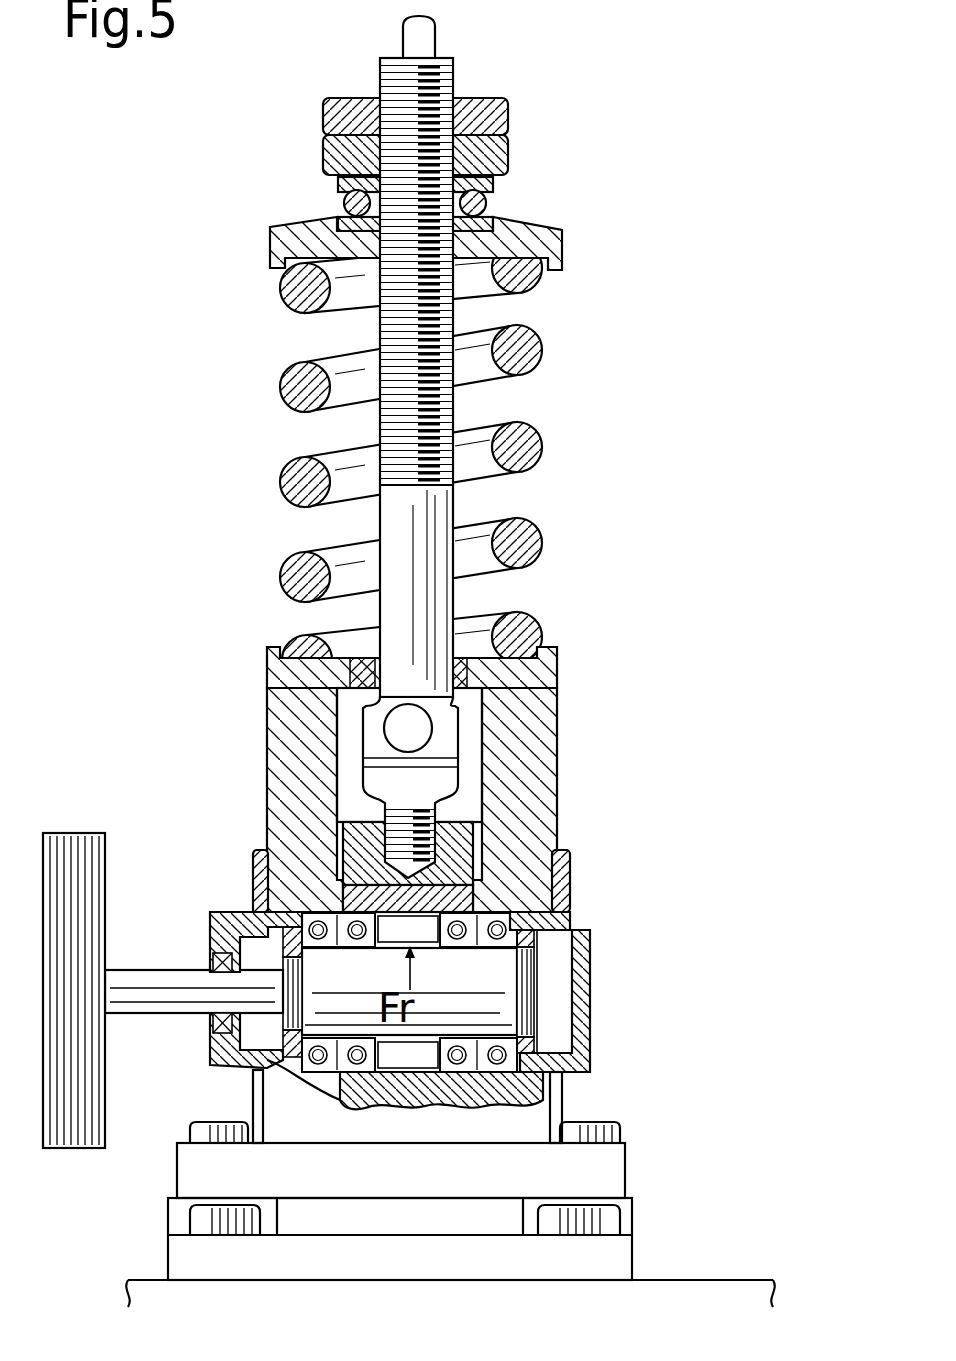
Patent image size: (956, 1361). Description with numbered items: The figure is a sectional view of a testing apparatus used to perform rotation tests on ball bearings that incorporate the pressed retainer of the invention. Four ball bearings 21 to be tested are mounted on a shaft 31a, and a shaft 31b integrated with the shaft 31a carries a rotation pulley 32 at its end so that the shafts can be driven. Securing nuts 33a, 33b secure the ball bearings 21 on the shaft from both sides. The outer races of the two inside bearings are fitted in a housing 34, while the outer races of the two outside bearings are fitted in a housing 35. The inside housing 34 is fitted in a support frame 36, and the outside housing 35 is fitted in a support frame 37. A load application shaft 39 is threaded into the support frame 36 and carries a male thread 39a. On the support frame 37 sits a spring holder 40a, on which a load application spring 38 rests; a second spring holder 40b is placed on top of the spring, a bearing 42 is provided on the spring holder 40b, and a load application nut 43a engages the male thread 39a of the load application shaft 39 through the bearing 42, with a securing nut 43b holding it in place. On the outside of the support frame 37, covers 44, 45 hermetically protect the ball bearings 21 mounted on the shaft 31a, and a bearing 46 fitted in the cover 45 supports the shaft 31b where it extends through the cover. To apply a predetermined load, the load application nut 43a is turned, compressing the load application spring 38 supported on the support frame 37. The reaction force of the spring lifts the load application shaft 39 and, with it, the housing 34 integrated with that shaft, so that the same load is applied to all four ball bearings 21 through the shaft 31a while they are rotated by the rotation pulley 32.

The ball bearing 21 is at (317, 922).
The shaft 31a is at (497, 973).
The shaft 31b is at (163, 975).
The rotation pulley 32 is at (73, 838).
The securing nut 33a is at (555, 1045).
The securing nut 33b is at (240, 1065).
The housing 34 is at (475, 866).
The housing 35 is at (487, 892).
The support frame 36 is at (358, 820).
The support frame 37 is at (537, 720).
The load application spring 38 is at (542, 433).
The load application shaft 39 is at (432, 508).
The male thread 39a is at (455, 300).
The spring holder 40a is at (558, 662).
The spring holder 40b is at (563, 232).
The bearing 42 is at (487, 202).
The load application nut 43a is at (335, 158).
The securing nut 43b is at (333, 110).
The cover 44 is at (578, 905).
The cover 45 is at (228, 912).
The bearing 46 is at (212, 1020).